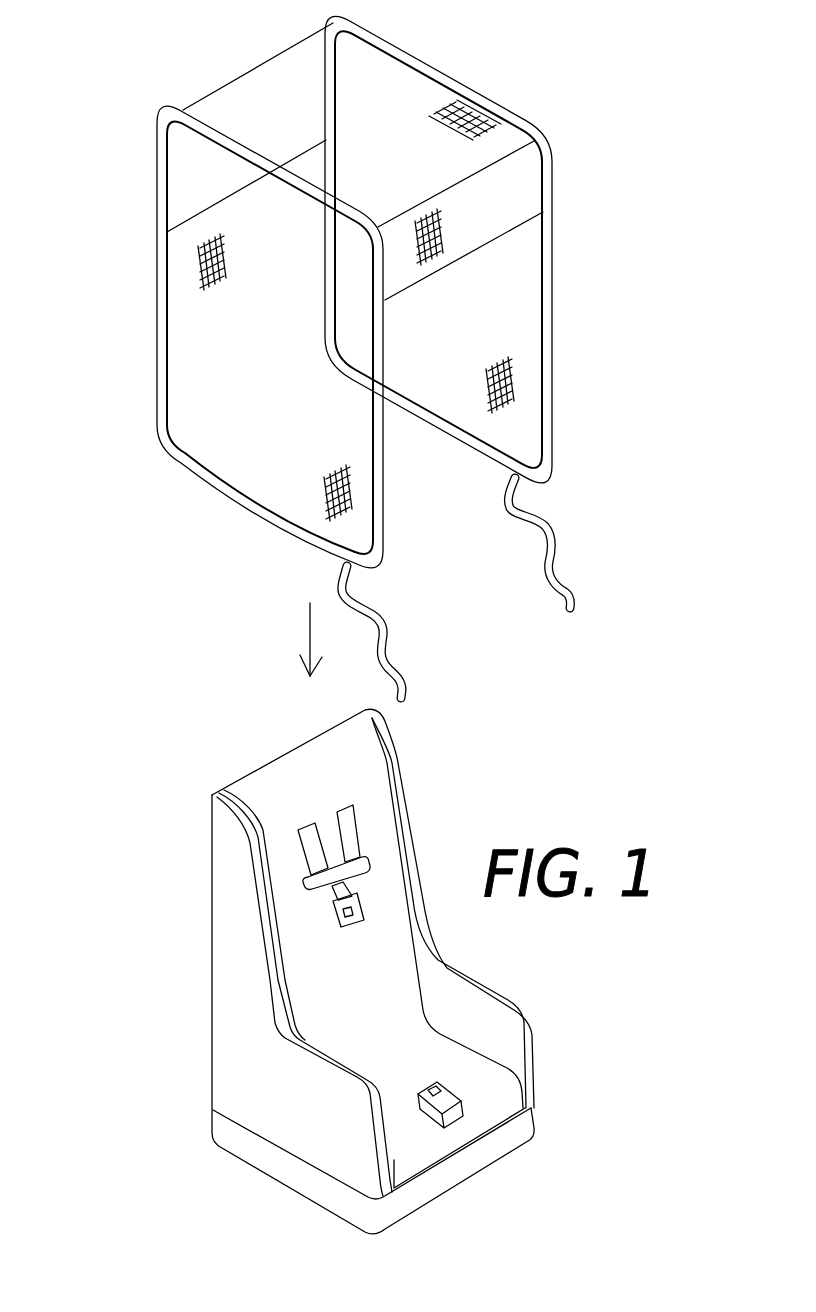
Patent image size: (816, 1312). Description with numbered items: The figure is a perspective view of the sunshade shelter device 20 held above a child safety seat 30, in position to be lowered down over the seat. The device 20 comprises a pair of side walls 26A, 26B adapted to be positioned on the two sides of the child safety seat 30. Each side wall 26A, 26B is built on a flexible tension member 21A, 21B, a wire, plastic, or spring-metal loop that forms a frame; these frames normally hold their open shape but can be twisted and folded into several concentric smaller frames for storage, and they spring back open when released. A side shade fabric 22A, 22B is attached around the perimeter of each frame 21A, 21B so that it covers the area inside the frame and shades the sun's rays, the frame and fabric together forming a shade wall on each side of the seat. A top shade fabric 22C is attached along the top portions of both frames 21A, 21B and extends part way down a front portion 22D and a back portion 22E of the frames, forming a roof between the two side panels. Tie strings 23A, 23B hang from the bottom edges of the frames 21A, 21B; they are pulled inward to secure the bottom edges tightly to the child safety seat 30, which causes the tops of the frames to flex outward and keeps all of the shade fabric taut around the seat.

The sunshade shelter device 20 is at (141, 121).
The flexible tension member 21A is at (275, 518).
The flexible tension member 21B is at (601, 433).
The side shade fabric 22A is at (255, 377).
The side shade fabric 22B is at (492, 315).
The top shade fabric 22C is at (405, 113).
The front portion 22D is at (515, 193).
The back portion 22E is at (223, 90).
The tie string 23A is at (395, 653).
The tie string 23B is at (552, 521).
The side wall 26A is at (197, 482).
The side wall 26B is at (490, 73).
The child safety seat 30 is at (203, 843).